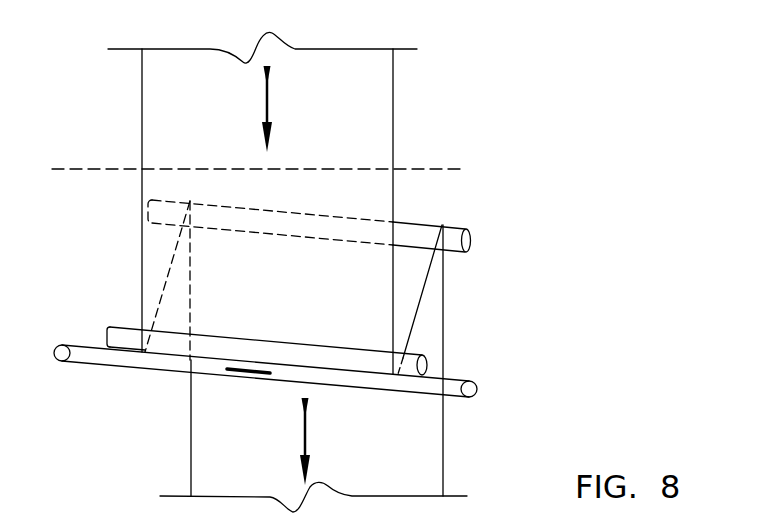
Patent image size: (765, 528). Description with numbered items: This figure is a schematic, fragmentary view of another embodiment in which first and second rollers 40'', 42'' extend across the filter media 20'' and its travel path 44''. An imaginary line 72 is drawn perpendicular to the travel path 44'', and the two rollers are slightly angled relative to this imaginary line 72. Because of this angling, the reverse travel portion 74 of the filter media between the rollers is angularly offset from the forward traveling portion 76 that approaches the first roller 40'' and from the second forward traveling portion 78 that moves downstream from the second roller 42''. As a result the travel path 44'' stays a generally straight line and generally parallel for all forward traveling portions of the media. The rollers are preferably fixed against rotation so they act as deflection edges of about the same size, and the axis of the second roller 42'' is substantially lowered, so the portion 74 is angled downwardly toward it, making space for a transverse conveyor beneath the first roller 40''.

The filter media 20'' is at (253, 272).
The travel path 44'' is at (328, 275).
The imaginary line 72 is at (440, 170).
The second roller 42'' is at (355, 223).
The forward traveling portion of the filter media 76 is at (141, 260).
The reverse travel portion of the filter media 74 is at (410, 275).
The first roller 40'' is at (218, 330).
The second forward traveling portion of the filter media 78 is at (193, 423).